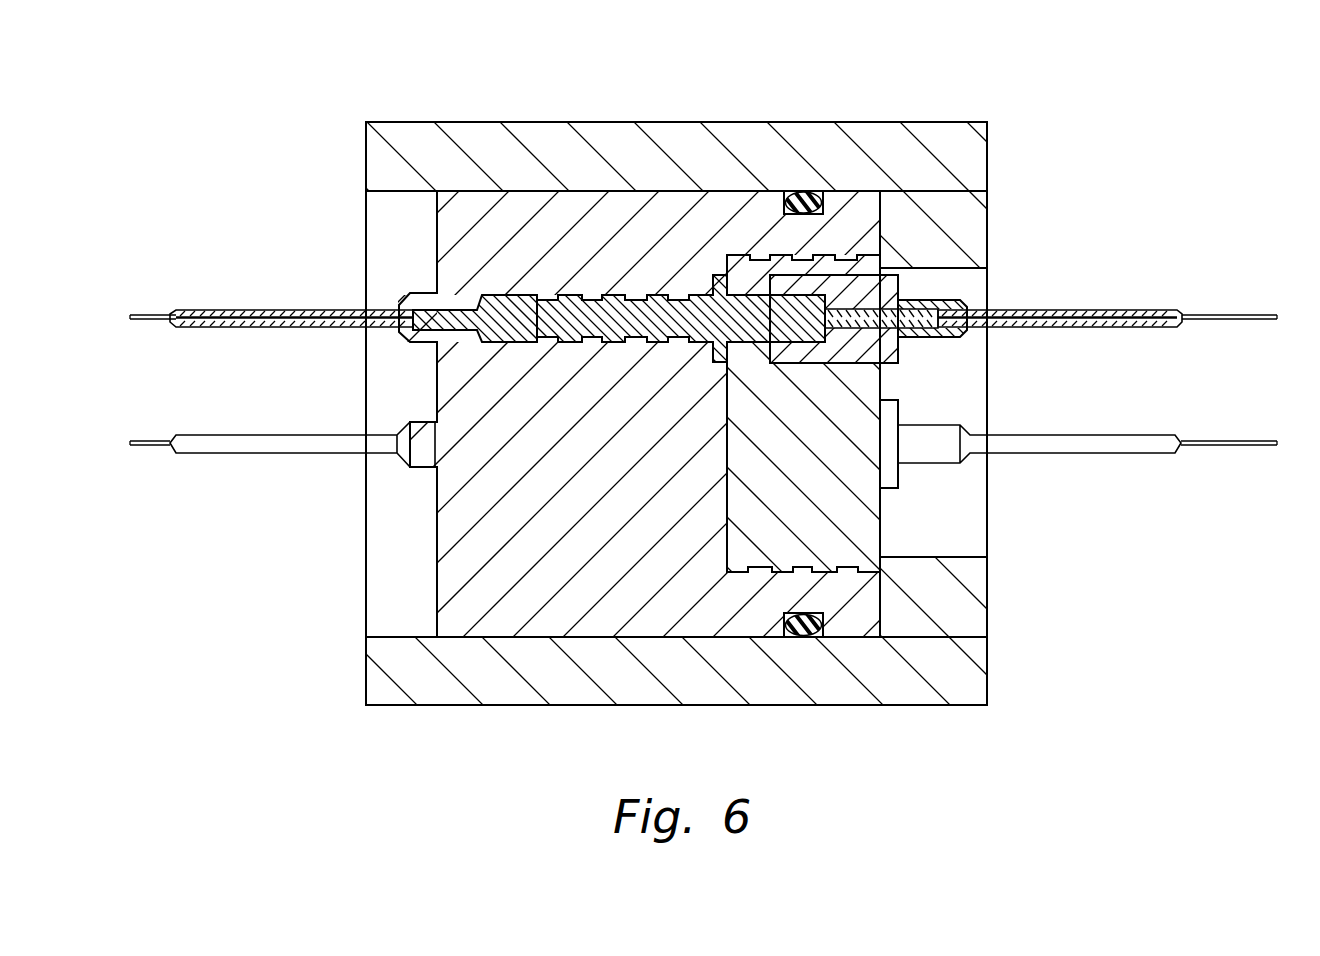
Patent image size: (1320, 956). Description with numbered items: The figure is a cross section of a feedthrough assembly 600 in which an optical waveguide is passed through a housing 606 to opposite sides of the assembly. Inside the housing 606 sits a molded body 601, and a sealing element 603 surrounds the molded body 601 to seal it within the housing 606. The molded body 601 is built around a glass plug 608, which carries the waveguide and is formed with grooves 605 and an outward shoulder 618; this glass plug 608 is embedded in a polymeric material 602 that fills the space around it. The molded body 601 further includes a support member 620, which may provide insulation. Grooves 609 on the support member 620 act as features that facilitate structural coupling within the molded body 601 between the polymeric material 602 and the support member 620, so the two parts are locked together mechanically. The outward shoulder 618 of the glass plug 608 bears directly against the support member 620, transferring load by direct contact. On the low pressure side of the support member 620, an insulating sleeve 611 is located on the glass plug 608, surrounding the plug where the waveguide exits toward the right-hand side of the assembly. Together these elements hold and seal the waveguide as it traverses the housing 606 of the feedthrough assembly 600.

The feedthrough assembly 600 is at (222, 72).
The molded body 601 is at (392, 376).
The polymeric material 602 is at (448, 573).
The sealing element 603 is at (800, 188).
The grooves 605 is at (556, 346).
The housing 606 is at (978, 633).
The glass plug 608 is at (509, 346).
The grooves 609 is at (750, 250).
The insulating sleeve 611 is at (892, 350).
The outward shoulder 618 is at (702, 350).
The support member 620 is at (878, 505).